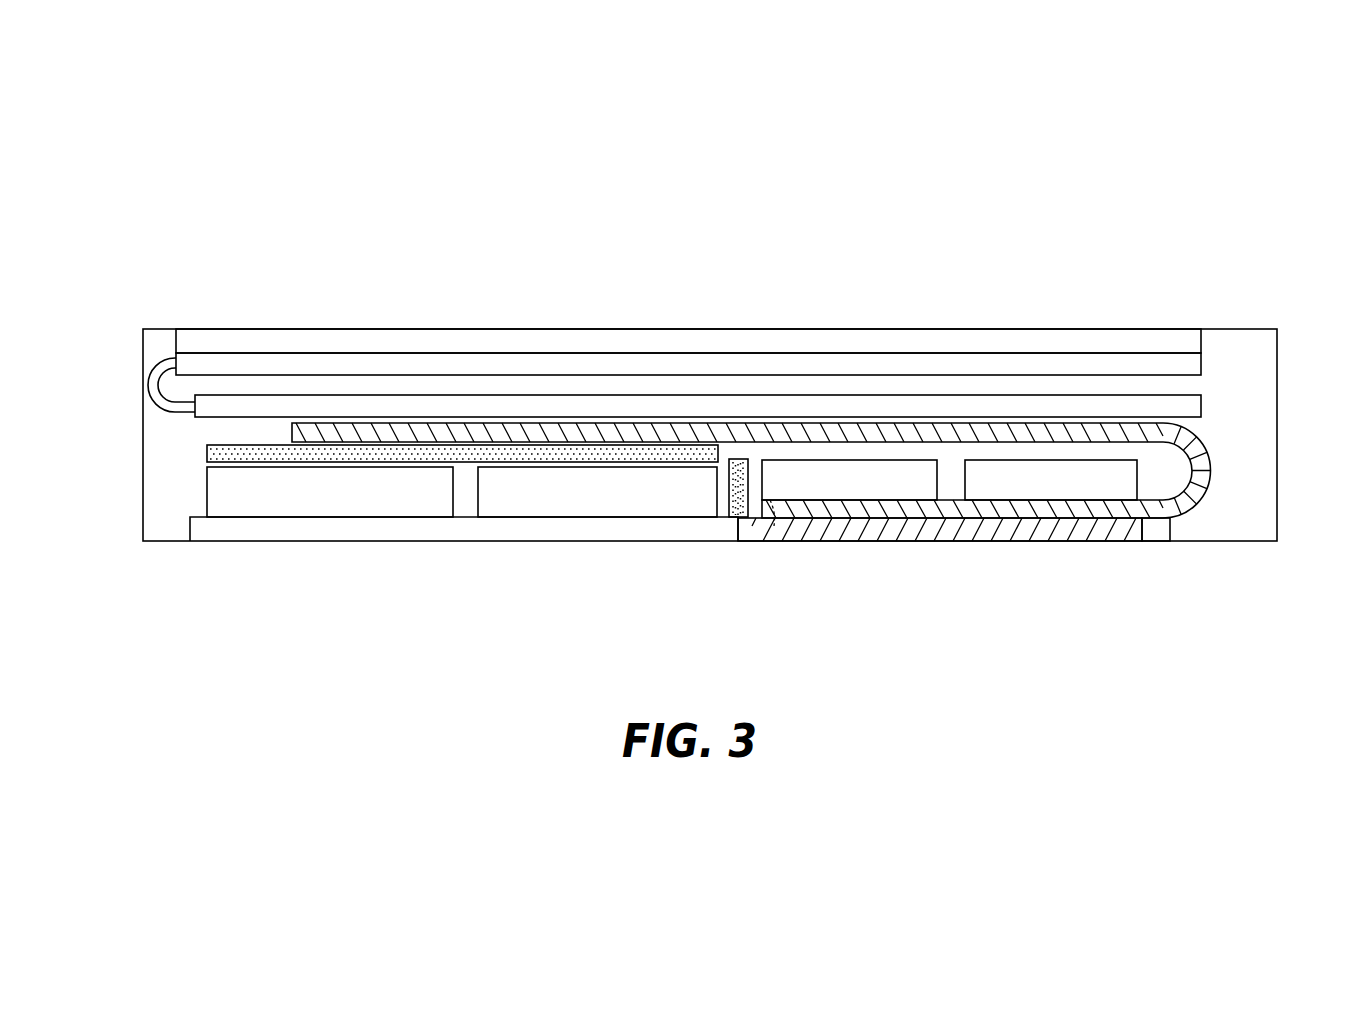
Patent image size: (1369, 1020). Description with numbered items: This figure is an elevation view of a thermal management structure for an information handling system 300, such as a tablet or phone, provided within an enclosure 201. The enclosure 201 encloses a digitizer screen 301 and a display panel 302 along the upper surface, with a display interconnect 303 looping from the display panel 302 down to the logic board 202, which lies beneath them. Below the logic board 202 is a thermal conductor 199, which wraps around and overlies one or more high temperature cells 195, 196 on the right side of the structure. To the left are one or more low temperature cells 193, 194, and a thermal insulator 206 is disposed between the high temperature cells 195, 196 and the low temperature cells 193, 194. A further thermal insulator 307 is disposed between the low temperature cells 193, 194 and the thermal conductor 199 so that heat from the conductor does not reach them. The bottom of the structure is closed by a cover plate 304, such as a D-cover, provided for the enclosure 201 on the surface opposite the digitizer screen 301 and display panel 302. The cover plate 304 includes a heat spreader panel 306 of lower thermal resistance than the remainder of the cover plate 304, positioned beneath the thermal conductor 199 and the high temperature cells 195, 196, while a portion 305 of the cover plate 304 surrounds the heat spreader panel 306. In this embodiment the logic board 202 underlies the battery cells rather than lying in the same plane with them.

The information handling system 300 is at (266, 145).
The enclosure 201 is at (143, 432).
The digitizer screen 301 is at (440, 340).
The display panel 302 is at (594, 362).
The display interconnect 303 is at (158, 352).
The logic board 202 is at (1203, 408).
The thermal conductor 199 is at (1210, 448).
The thermal insulator 307 is at (207, 457).
The low temperature cell 193 is at (207, 500).
The low temperature cell 194 is at (477, 500).
The thermal insulator 206 is at (727, 493).
The high temperature cell 195 is at (937, 480).
The high temperature cell 196 is at (1140, 483).
The cover plate 304 is at (325, 544).
The heat spreader panel 306 is at (1030, 545).
The portion of cover plate 305 is at (1160, 545).